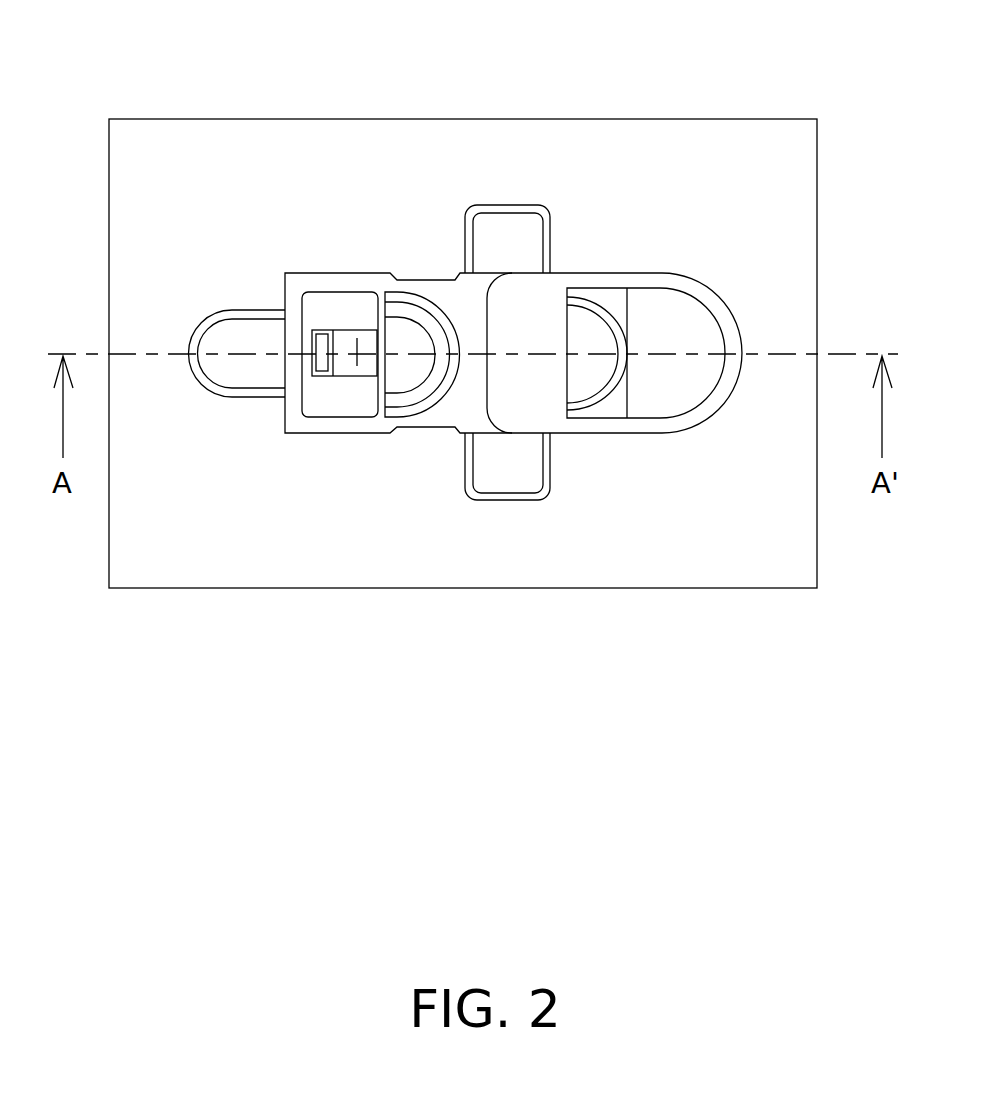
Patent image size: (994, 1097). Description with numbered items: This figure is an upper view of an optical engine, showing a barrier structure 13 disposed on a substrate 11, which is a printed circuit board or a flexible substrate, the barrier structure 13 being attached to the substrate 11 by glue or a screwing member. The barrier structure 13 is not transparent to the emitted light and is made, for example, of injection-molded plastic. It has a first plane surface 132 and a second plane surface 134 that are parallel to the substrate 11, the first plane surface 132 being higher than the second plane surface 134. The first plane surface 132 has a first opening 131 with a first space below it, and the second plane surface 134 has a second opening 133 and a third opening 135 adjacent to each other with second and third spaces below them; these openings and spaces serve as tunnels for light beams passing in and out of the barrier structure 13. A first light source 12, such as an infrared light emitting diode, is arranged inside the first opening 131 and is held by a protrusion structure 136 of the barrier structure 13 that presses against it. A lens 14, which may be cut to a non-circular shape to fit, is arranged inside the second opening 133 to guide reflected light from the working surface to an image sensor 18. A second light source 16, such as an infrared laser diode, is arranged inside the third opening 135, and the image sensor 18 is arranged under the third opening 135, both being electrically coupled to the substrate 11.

The substrate 11 is at (817, 212).
The first light source 12 is at (590, 378).
The barrier structure 13 is at (695, 276).
The first opening 131 is at (615, 308).
The first plane surface 132 is at (547, 395).
The second opening 133 is at (412, 308).
The second plane surface 134 is at (460, 400).
The third opening 135 is at (325, 308).
The protrusion structure 136 is at (680, 388).
The lens 14 is at (408, 377).
The second light source 16 is at (320, 373).
The image sensor 18 is at (352, 373).